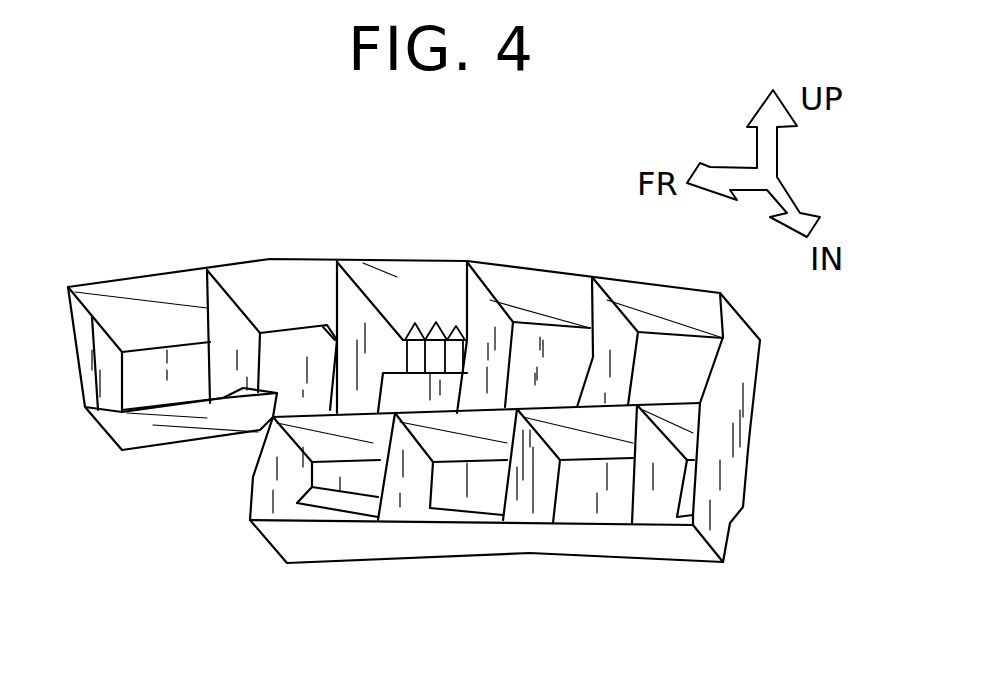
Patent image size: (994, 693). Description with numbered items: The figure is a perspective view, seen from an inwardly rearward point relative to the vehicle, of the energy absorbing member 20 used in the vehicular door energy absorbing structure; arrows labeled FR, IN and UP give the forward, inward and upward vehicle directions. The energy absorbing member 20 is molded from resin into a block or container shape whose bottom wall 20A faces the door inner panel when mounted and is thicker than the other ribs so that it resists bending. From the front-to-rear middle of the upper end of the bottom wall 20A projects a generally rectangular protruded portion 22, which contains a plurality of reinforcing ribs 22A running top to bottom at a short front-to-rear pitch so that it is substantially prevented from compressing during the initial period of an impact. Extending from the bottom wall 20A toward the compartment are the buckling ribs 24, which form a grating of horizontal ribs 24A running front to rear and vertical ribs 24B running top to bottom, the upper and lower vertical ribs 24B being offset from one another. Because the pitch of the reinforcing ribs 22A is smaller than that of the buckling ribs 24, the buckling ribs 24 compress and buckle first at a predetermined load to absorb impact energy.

The energy absorbing member 20 is at (758, 328).
The bottom wall 20A is at (290, 347).
The protruded portion 22 is at (393, 315).
The reinforcing ribs 22A is at (430, 337).
The buckling ribs 24 is at (242, 228).
The horizontal ribs 24A is at (102, 298).
The vertical ribs 24B is at (110, 387).